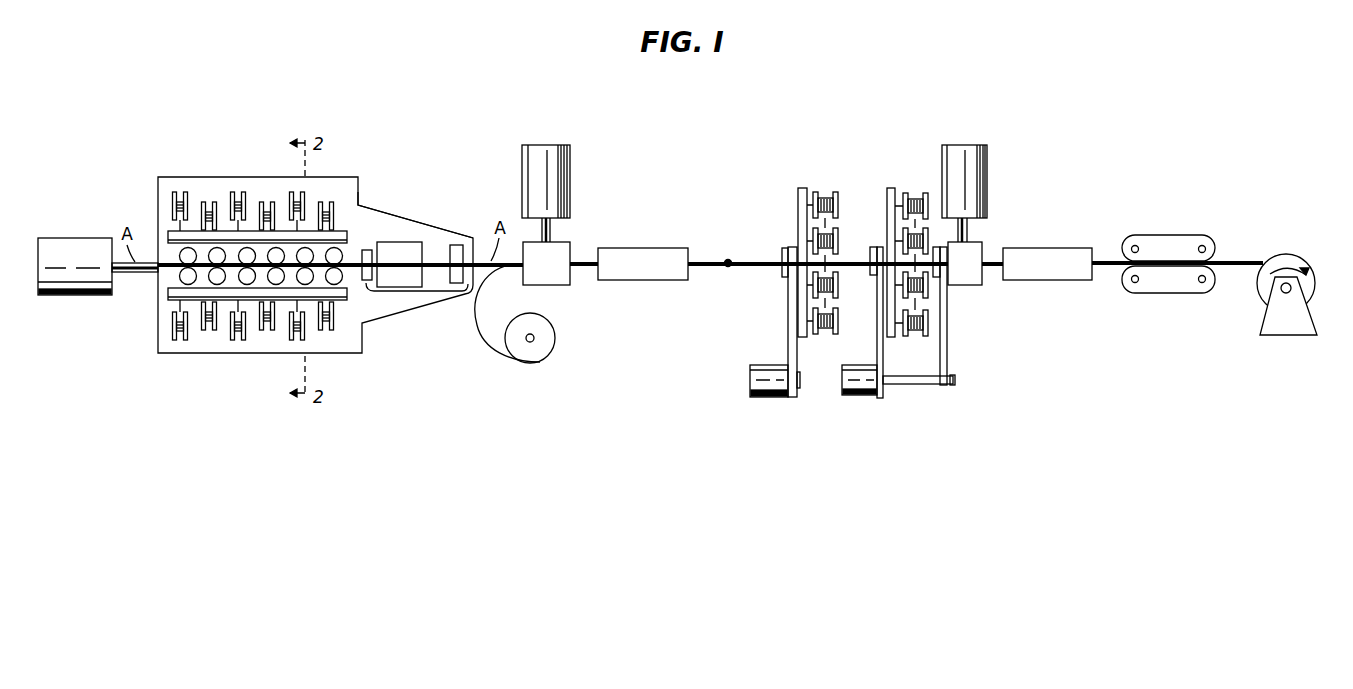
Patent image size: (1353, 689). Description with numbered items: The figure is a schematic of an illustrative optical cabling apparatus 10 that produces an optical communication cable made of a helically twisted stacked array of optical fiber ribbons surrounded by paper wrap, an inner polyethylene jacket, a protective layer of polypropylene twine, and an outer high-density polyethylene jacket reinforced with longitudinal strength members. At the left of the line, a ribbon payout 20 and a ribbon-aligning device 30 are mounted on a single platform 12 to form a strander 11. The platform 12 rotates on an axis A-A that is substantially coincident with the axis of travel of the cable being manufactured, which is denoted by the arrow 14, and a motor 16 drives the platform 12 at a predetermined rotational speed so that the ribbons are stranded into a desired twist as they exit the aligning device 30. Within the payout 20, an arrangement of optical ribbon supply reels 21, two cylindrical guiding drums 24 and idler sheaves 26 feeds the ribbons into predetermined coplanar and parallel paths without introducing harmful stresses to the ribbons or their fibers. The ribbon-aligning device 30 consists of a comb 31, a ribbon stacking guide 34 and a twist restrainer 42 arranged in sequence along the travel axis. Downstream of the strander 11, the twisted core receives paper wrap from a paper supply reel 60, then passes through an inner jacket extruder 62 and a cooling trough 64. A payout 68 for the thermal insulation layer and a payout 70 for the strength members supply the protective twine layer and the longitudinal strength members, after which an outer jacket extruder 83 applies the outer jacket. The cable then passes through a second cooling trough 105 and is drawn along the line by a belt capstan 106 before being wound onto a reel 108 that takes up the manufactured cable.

The optical cabling apparatus 10 is at (652, 349).
The strander 11 is at (200, 177).
The platform 12 is at (360, 192).
The arrow denoting axis of travel 14 is at (732, 267).
The motor 16 is at (79, 250).
The ribbon payout 20 is at (226, 183).
The optical ribbon supply reels 21 is at (326, 203).
The cylindrical guiding drums 24 is at (172, 237).
The idler sheaves 26 is at (185, 280).
The ribbon-aligning device 30 is at (417, 292).
The comb 31 is at (368, 250).
The ribbon stacking guide 34 is at (400, 250).
The twist restrainer 42 is at (455, 248).
The paper supply reel 60 is at (538, 352).
The inner jacket extruder 62 is at (523, 167).
The cooling trough 64 is at (647, 253).
The payout for the thermal insulation layer 68 is at (798, 215).
The payout for the strength members 70 is at (888, 212).
The outer jacket extruder 83 is at (990, 173).
The second cooling trough 105 is at (1038, 255).
The belt capstan 106 is at (1162, 238).
The take-up reel 108 is at (1315, 297).